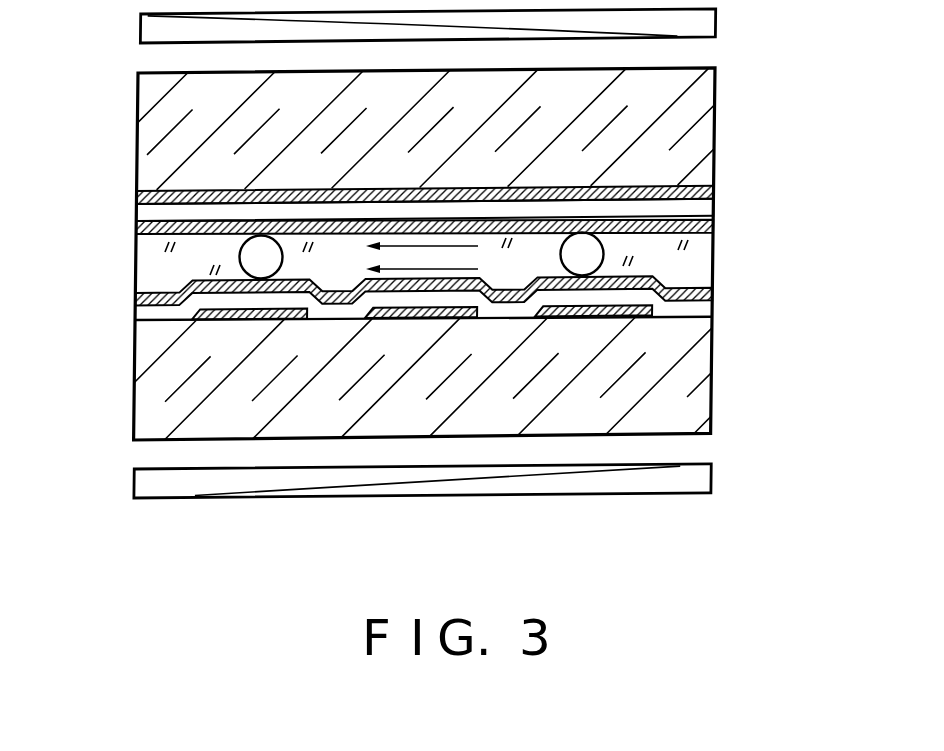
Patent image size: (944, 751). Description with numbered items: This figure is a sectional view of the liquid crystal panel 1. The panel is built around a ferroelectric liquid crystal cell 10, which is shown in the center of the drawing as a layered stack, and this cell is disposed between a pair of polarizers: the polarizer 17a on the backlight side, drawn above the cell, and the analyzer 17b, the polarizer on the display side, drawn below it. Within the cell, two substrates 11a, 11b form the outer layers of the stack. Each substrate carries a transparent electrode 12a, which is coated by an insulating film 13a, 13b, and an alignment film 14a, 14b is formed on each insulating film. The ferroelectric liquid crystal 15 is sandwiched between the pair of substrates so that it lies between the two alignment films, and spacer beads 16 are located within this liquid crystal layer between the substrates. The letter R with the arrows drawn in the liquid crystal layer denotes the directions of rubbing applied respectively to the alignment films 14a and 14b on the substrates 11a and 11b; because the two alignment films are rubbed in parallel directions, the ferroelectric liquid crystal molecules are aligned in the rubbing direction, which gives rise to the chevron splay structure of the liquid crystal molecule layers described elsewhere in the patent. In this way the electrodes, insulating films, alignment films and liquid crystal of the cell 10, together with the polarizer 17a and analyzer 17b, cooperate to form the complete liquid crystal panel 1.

The liquid crystal panel 1 is at (443, 540).
The ferroelectric liquid crystal cell 10 is at (843, 413).
The substrate 11a is at (715, 122).
The substrate 11b is at (715, 392).
The transparent electrode 12a is at (715, 190).
The insulating film 13a is at (715, 207).
The insulating film 13b is at (715, 310).
The alignment film 14a is at (715, 220).
The alignment film 14b is at (715, 293).
The ferroelectric liquid crystal 15 is at (715, 267).
The spacer beads 16 is at (246, 250).
The polarizer 17a is at (140, 30).
The analyzer 17b is at (134, 484).